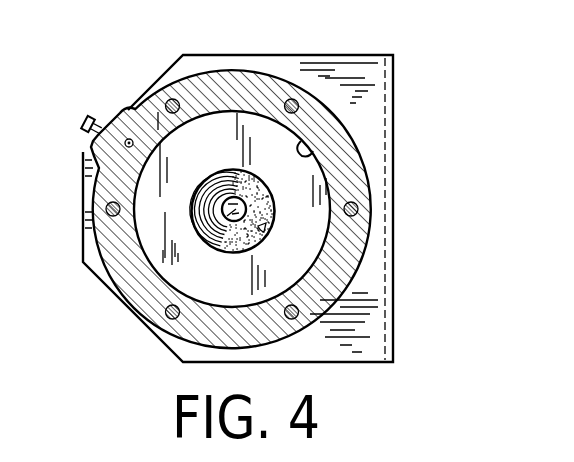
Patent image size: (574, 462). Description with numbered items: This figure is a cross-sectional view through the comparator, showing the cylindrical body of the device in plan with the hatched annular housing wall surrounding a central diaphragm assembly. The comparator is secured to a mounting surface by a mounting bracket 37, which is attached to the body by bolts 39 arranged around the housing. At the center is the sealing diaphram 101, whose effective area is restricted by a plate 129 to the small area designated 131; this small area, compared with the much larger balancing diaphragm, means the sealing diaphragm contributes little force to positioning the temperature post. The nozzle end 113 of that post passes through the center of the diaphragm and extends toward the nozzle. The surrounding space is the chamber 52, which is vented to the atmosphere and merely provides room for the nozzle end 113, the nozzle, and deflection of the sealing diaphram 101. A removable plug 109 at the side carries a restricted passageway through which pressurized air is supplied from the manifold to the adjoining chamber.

The mounting bracket 37 is at (373, 92).
The bolts 39 is at (298, 97).
The chamber 52 is at (312, 152).
The sealing diaphram 101 is at (208, 178).
The removable plug 109 is at (89, 118).
The nozzle end 113 is at (229, 216).
The plate 129 is at (313, 220).
The effective area 131 is at (265, 228).